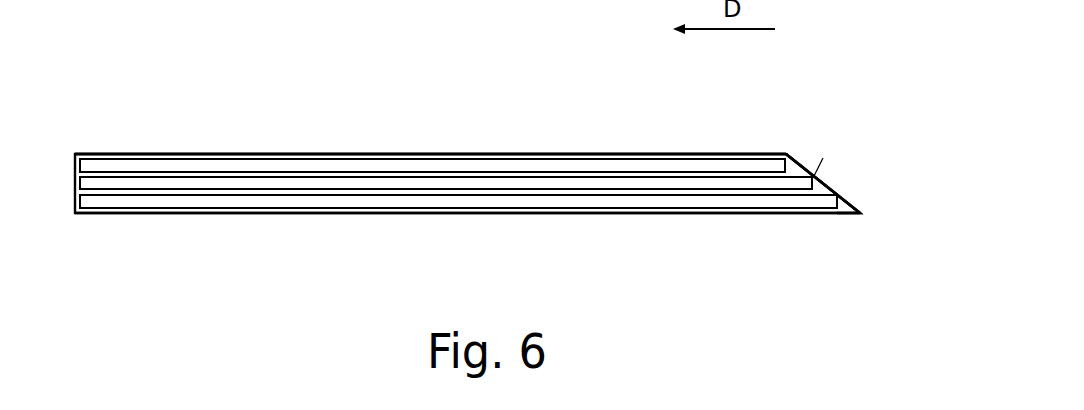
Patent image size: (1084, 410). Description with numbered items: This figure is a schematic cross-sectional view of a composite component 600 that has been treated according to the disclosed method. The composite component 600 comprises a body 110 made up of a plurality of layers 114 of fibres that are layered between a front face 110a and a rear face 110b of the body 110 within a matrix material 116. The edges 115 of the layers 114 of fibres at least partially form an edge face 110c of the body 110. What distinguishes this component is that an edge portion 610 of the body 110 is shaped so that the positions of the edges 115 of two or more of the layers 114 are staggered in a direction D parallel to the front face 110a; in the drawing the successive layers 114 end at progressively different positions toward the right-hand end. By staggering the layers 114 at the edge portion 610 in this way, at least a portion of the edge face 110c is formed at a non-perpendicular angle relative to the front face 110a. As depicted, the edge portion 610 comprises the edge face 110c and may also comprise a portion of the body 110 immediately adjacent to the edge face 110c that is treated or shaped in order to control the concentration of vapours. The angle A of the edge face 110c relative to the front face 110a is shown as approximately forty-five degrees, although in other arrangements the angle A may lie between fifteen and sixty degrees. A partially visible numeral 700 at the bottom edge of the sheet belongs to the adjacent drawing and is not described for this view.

The composite component 600 is at (363, 92).
The edge portion 610 is at (815, 83).
The body 110 is at (238, 153).
The front face 110a is at (438, 153).
The rear face 110b is at (383, 212).
The edge face 110c is at (786, 155).
The layers of fibres 114 is at (515, 168).
The edges of the layers of fibres 115 is at (788, 154).
The angle of the edge face A is at (813, 163).
The matrix material 116 is at (587, 153).
The assembly (FIG. 7, partially visible) 700 is at (781, 403).